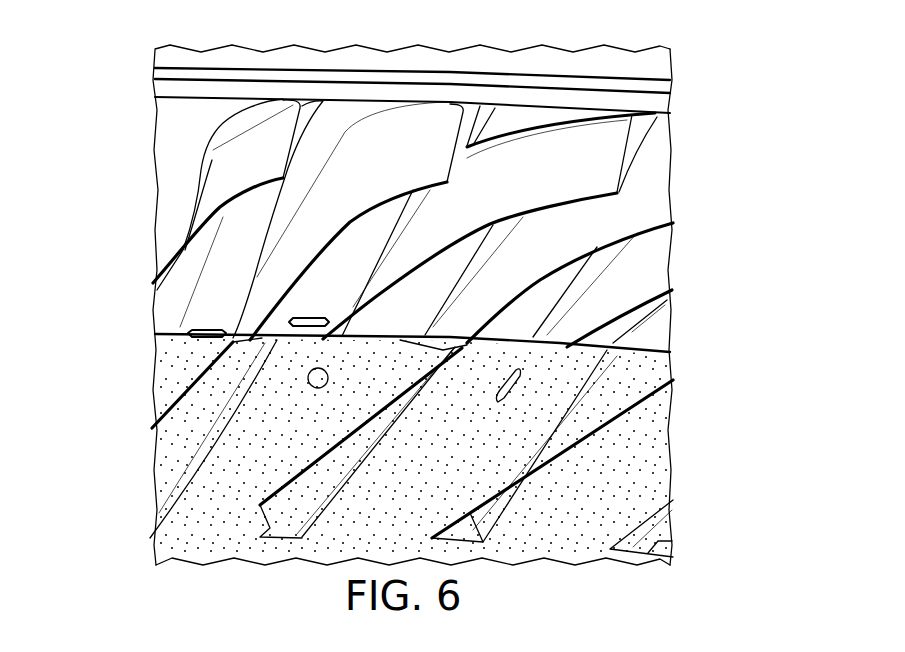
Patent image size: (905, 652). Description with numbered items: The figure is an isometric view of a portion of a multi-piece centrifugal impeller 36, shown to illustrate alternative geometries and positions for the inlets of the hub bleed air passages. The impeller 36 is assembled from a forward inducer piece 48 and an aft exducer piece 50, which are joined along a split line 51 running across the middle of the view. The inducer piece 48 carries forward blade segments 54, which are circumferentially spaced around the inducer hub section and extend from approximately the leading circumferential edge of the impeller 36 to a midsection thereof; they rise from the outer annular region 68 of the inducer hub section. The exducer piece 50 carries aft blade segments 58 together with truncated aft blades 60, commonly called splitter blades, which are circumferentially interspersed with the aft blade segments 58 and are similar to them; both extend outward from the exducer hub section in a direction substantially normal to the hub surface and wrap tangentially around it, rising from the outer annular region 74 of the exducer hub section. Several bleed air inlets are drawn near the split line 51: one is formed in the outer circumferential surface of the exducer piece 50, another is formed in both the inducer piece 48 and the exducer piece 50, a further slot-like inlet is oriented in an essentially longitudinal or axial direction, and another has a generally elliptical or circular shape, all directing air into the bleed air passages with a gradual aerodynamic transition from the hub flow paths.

The multi-piece centrifugal impeller 36 is at (123, 82).
The forward inducer piece 48 is at (665, 460).
The aft exducer piece 50 is at (665, 162).
The split line 51 is at (394, 338).
The forward blade segments 54 is at (167, 462).
The aft blade segments 58 is at (420, 135).
The truncated aft blades 60 is at (253, 133).
The outer annular region 68 is at (413, 523).
The outer annular region 74 is at (247, 215).